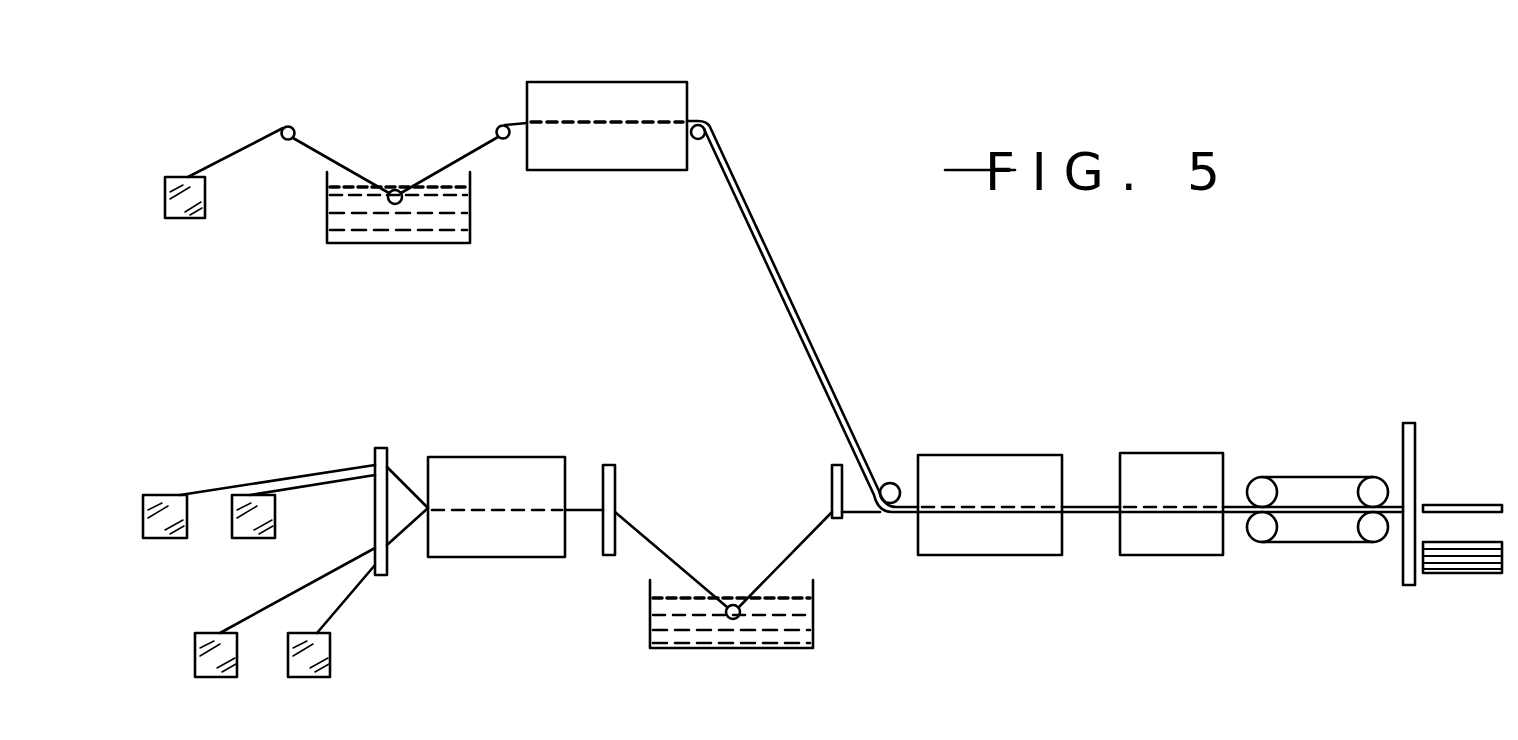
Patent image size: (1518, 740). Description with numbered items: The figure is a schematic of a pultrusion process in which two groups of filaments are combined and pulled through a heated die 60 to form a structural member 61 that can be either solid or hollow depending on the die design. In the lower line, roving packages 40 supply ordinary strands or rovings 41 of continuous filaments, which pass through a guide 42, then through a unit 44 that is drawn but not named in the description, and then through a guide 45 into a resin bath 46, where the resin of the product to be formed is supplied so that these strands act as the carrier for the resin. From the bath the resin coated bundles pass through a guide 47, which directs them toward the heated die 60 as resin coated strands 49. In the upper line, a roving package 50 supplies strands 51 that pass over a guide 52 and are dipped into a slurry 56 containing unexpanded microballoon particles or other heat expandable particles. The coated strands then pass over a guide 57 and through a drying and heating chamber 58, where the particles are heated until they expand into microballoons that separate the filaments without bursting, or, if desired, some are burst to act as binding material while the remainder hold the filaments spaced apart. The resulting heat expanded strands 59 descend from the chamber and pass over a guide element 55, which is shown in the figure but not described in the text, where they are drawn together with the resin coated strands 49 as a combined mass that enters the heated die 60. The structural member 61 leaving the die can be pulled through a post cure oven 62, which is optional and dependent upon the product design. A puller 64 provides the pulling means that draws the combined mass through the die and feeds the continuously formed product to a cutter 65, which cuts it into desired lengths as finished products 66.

The roving packages 40 is at (150, 495).
The strands or rovings 41 is at (325, 565).
The guide 42 is at (380, 448).
The twisting unit 44 is at (518, 457).
The guide 45 is at (615, 510).
The resin bath 46 is at (693, 648).
The guide 47 is at (832, 490).
The resin coated strands 49 is at (857, 500).
The roving package 50 is at (185, 218).
The strands of filaments 51 is at (240, 150).
The guide 52 is at (288, 127).
The guide pulley 55 is at (888, 483).
The slurry containing heat expandable particles 56 is at (393, 186).
The guide 57 is at (503, 125).
The drying and heating chamber 58 is at (637, 82).
The heat expanded strands 59 is at (780, 273).
The heated die 60 is at (972, 557).
The structural member 61 is at (1082, 505).
The post cure oven 62 is at (1175, 557).
The puller 64 is at (1300, 545).
The cutter 65 is at (1415, 440).
The finished products 66 is at (1468, 575).